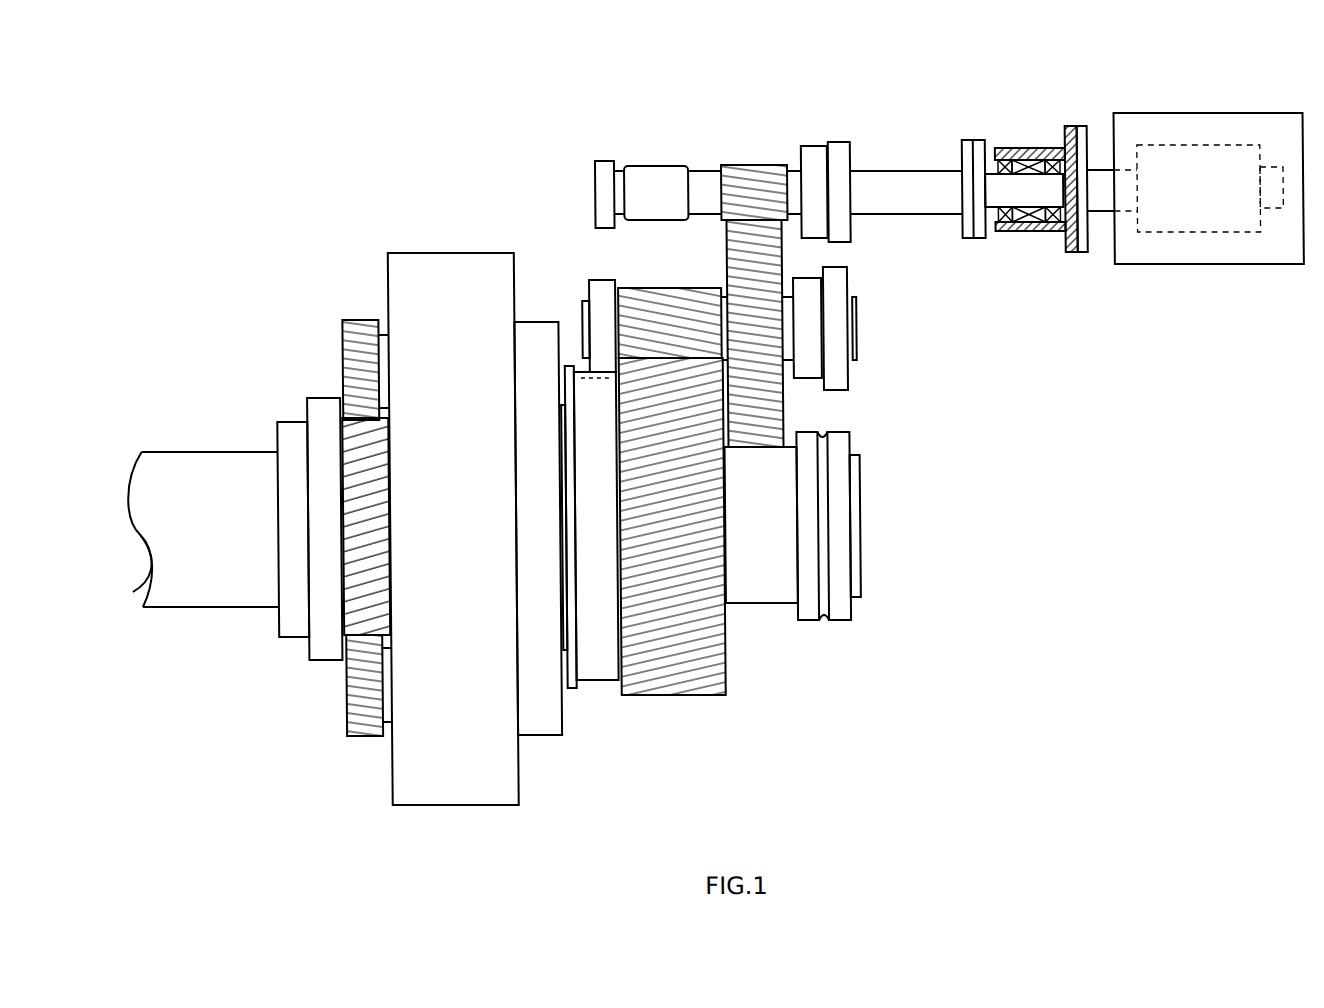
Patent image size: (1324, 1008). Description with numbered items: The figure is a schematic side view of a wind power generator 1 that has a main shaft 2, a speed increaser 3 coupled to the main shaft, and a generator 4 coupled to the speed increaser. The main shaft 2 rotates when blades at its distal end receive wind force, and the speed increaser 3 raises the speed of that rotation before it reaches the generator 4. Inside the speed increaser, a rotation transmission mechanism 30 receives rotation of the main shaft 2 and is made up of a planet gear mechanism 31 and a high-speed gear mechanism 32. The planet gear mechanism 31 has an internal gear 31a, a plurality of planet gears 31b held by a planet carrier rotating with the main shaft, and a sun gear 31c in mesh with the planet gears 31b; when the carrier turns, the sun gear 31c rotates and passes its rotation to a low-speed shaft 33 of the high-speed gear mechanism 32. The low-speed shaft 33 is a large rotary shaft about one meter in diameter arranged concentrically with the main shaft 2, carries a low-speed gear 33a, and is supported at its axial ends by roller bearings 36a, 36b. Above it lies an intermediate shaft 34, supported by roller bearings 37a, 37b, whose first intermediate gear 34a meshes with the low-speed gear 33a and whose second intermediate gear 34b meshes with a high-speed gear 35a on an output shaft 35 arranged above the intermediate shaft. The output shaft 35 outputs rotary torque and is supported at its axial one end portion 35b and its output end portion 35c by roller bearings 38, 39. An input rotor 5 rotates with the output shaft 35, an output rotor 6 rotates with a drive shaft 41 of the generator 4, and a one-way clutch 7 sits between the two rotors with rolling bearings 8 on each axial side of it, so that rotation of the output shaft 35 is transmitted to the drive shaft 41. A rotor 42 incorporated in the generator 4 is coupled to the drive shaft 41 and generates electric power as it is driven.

The wind power generator 1 is at (1095, 95).
The main shaft 2 is at (168, 466).
The speed increaser 3 is at (446, 205).
The generator 4 is at (1181, 266).
The input rotor 5 is at (1020, 180).
The output rotor 6 is at (1035, 148).
The one-way clutch 7 is at (1029, 222).
The rolling bearings 8 is at (1003, 222).
The rotation transmission mechanism 30 is at (367, 265).
The planet gear mechanism 31 is at (478, 250).
The internal gear 31a is at (417, 263).
The planet gears 31b is at (352, 348).
The sun gear 31c is at (348, 468).
The high-speed gear mechanism 32 is at (743, 128).
The low-speed shaft 33 is at (762, 607).
The low-speed gear 33a is at (673, 687).
The intermediate shaft 34 is at (583, 302).
The first intermediate gear 34a is at (662, 293).
The second intermediate gear 34b is at (784, 251).
The output shaft 35 is at (662, 165).
The high-speed gear 35a is at (758, 165).
The axial one end portion 35b is at (637, 172).
The axial other end portion 35c is at (902, 171).
The roller bearing 36a is at (600, 672).
The roller bearing 36b is at (807, 620).
The roller bearing 37a is at (603, 283).
The roller bearing 37b is at (808, 297).
The roller bearing 38 is at (602, 160).
The roller bearing 39 is at (810, 147).
The drive shaft 41 is at (1102, 211).
The rotor 42 is at (1233, 226).